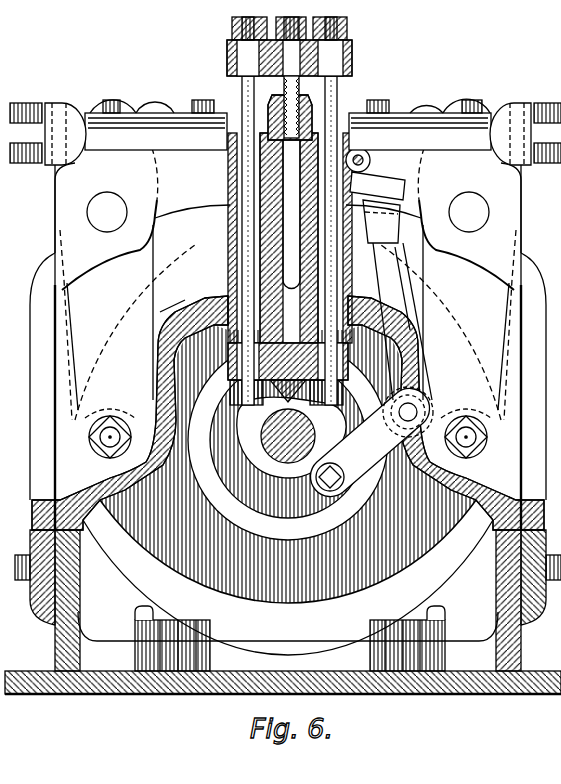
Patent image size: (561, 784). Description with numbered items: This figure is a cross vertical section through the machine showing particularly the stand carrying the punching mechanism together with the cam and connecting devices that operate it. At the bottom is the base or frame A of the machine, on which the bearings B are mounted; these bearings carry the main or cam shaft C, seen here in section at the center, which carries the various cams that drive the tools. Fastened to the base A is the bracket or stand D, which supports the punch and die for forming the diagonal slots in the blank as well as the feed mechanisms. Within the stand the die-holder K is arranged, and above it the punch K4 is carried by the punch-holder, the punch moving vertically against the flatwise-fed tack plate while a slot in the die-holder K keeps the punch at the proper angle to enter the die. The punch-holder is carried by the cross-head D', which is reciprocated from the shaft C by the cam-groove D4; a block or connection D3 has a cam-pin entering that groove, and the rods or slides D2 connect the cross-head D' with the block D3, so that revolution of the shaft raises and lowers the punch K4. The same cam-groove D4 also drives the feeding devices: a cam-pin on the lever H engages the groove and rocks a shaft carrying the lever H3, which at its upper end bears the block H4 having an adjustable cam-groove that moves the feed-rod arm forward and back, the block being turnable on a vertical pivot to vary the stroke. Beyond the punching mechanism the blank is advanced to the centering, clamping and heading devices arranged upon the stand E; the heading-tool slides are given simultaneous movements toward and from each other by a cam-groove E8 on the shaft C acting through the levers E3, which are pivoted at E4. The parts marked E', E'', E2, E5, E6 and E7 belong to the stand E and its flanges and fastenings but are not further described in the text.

The base or frame A is at (283, 607).
The bearings B is at (137, 614).
The main or cam shaft C is at (291, 437).
The bracket or stand D is at (283, 402).
The cross-head D' is at (302, 46).
The rods or slides D2 is at (248, 106).
The block or connection D3 is at (190, 305).
The cam or cam-groove D4 is at (312, 528).
The stand E is at (288, 321).
The frame bolts E' is at (283, 133).
The frame boss E'' is at (387, 162).
The frame flange E2 is at (180, 143).
The levers E3 is at (104, 298).
The pivot E4 is at (288, 212).
The flange bolts E5 is at (147, 96).
The flange clamp E6 is at (84, 96).
The frame foot bolt E7 is at (128, 401).
The cam-groove E8 is at (215, 275).
The lever H is at (362, 465).
The lever H3 is at (400, 281).
The block H4 is at (377, 207).
The die-holder K is at (262, 158).
The punch K4 is at (312, 118).